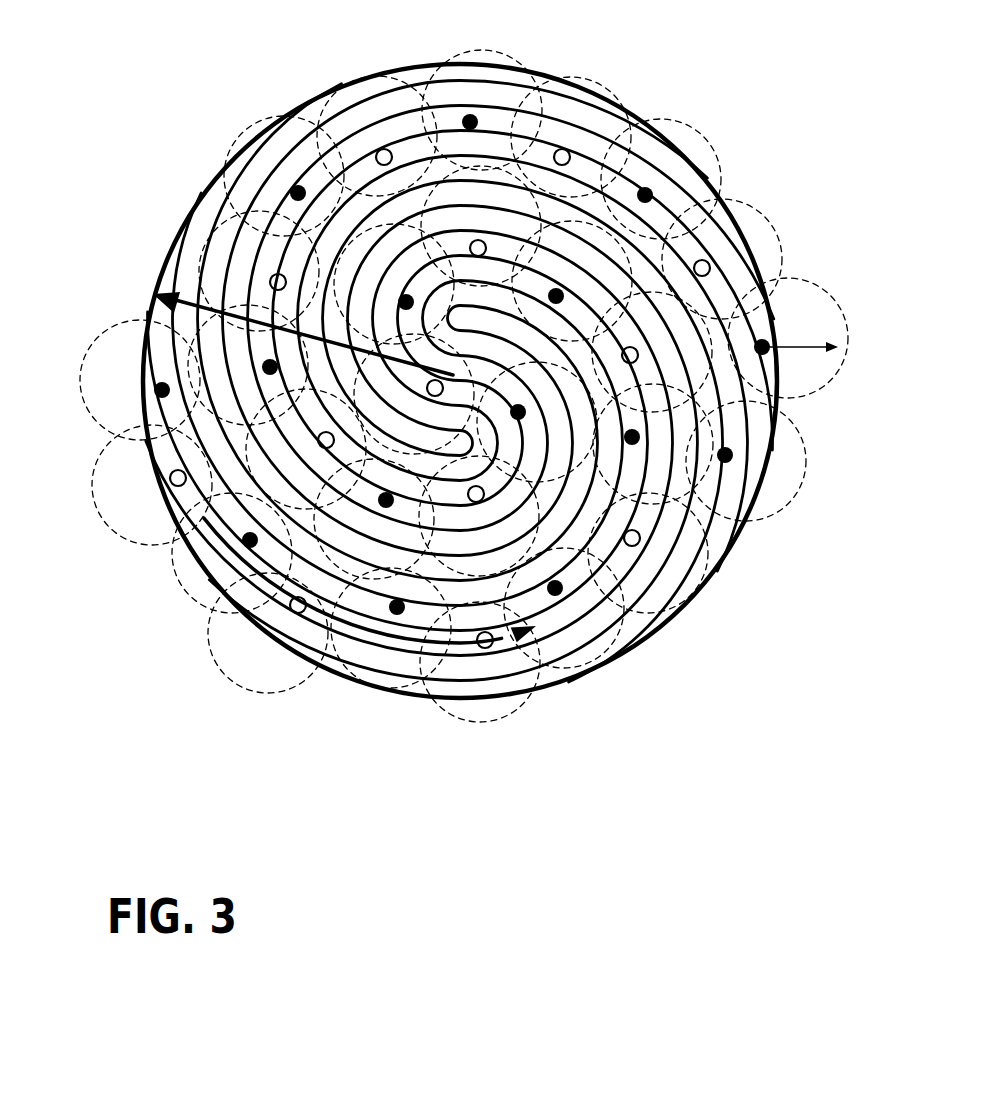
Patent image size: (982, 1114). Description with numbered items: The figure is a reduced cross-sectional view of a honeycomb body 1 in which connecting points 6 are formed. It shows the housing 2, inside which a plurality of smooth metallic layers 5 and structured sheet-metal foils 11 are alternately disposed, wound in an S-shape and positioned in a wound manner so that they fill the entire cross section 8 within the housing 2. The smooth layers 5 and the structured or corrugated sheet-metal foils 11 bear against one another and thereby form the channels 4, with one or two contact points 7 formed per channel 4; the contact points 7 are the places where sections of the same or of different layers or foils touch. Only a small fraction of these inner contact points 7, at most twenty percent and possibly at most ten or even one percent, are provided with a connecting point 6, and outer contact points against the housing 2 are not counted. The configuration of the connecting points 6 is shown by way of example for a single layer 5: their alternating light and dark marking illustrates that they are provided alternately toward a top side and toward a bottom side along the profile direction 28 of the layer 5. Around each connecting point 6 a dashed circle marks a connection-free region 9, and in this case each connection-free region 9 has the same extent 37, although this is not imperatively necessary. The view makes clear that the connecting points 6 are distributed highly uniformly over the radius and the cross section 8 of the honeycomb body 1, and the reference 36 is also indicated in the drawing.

The honeycomb body 1 is at (184, 686).
The housing 2 is at (620, 101).
The channels 4 is at (720, 370).
The smooth metallic layers 5 is at (190, 497).
The connecting points 6 is at (760, 300).
The contact points 7 is at (640, 603).
The cross section 8 is at (198, 58).
The connection-free region 9 is at (787, 393).
The structured sheet-metal foils 11 is at (730, 462).
The profile direction 28 is at (471, 645).
The diameter 36 is at (190, 300).
The extent 37 is at (782, 340).